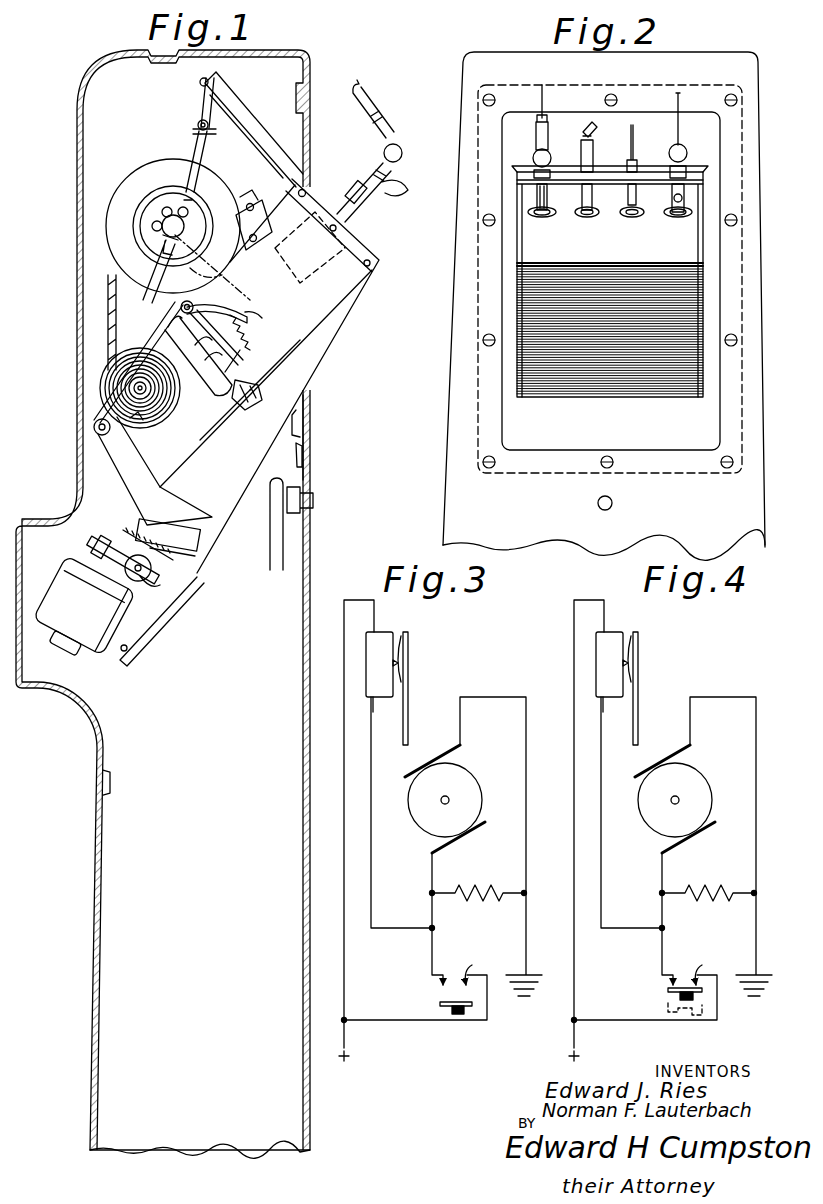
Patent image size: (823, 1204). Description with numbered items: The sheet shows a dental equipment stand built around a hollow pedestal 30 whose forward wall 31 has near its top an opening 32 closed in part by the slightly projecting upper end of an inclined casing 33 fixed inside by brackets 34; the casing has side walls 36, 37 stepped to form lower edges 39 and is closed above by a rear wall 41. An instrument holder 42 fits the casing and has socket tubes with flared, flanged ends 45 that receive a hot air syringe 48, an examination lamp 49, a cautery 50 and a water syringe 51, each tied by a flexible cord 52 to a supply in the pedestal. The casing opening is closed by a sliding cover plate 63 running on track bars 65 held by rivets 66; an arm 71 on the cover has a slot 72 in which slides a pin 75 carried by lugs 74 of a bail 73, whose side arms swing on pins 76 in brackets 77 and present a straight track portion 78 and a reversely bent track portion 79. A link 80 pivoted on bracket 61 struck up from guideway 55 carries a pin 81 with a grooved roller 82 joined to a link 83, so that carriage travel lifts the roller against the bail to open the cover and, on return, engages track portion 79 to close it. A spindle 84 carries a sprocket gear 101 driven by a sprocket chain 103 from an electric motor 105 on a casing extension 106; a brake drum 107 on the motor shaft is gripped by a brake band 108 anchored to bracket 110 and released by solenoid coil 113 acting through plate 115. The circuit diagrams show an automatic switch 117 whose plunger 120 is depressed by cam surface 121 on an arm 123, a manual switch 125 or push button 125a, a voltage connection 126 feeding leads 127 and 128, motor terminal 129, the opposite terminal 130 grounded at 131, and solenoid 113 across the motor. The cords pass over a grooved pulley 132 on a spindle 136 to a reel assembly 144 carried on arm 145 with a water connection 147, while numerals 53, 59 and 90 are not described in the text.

In FIG. 1, the hollow support or pedestal 30 is at (305, 573).
In FIG. 2, the hollow support or pedestal 30 is at (443, 505).
In FIG. 1, the forward wall 31 is at (308, 418).
In FIG. 1, the opening 32 is at (305, 395).
In FIG. 2, the opening 32 is at (510, 356).
In FIG. 1, the casing 33 is at (348, 322).
In FIG. 2, the casing 33 is at (630, 367).
In FIG. 1, the brackets 34 is at (305, 440).
In FIG. 1, the side wall 36 is at (225, 433).
In FIG. 2, the side wall 37 is at (470, 478).
In FIG. 1, the lower edges 39 is at (195, 446).
In FIG. 1, the rear wall 41 is at (294, 190).
In FIG. 1, the instrument holder 42 is at (370, 252).
In FIG. 2, the instrument holder 42 is at (610, 284).
In FIG. 1, the flange 45 is at (350, 200).
In FIG. 1, the hot air syringe 48 is at (390, 128).
In FIG. 2, the hot air syringe 48 is at (538, 132).
In FIG. 2, the examination lamp 49 is at (591, 142).
In FIG. 2, the cautery 50 is at (637, 137).
In FIG. 2, the water syringe 51 is at (683, 142).
In FIG. 1, the flexible conducting element or cord 52 is at (112, 300).
In FIG. 2, the tank rim 53 is at (700, 166).
In FIG. 1, the guideway 55 is at (213, 395).
In FIG. 1, the spring 59 is at (255, 328).
In FIG. 1, the bracket 61 is at (243, 350).
In FIG. 1, the cover plate 63 is at (273, 107).
In FIG. 1, the track bars 65 is at (262, 142).
In FIG. 1, the rivets 66 is at (362, 262).
In FIG. 1, the arm 71 is at (206, 100).
In FIG. 1, the longitudinal slot 72 is at (212, 84).
In FIG. 1, the bail 73 is at (196, 139).
In FIG. 1, the spaced lugs 74 is at (243, 133).
In FIG. 1, the pin 75 is at (200, 121).
In FIG. 1, the pins 76 is at (103, 437).
In FIG. 1, the brackets 77 is at (122, 470).
In FIG. 1, the straight track portion 78 is at (205, 275).
In FIG. 1, the opposed track portion 79 is at (142, 428).
In FIG. 1, the link 80 is at (190, 345).
In FIG. 1, the pin 81 is at (212, 307).
In FIG. 1, the grooved roller 82 is at (184, 304).
In FIG. 1, the link 83 is at (258, 313).
In FIG. 1, the spindle 84 is at (252, 390).
In FIG. 1, the plate 90 is at (164, 530).
In FIG. 1, the sprocket gear 101 is at (166, 545).
In FIG. 1, the sprocket chain 103 is at (126, 522).
In FIG. 1, the electric motor 105 is at (62, 568).
In FIG. 3, the electric motor 105 is at (478, 780).
In FIG. 4, the electric motor 105 is at (708, 780).
In FIG. 1, the extension 106 is at (149, 615).
In FIG. 1, the brake drum 107 is at (100, 532).
In FIG. 1, the brake band 108 is at (92, 540).
In FIG. 1, the bracket 110 is at (165, 573).
In FIG. 3, the solenoid coil 113 is at (474, 885).
In FIG. 4, the solenoid coil 113 is at (704, 885).
In FIG. 1, the plate 115 is at (152, 592).
In FIG. 3, the automatic switch 117 is at (387, 632).
In FIG. 4, the automatic switch 117 is at (617, 632).
In FIG. 3, the switch plunger 120 is at (398, 663).
In FIG. 4, the switch plunger 120 is at (628, 663).
In FIG. 3, the cam surface 121 is at (402, 660).
In FIG. 4, the cam surface 121 is at (632, 660).
In FIG. 3, the arm 123 is at (409, 700).
In FIG. 4, the arm 123 is at (639, 700).
In FIG. 3, the manually operable switch 125 is at (440, 1004).
In FIG. 4, the manually operable switch 125 is at (668, 992).
In FIG. 1, the push button 125a is at (313, 498).
In FIG. 2, the push button 125a is at (613, 503).
In FIG. 3, the connection 126 is at (346, 1024).
In FIG. 4, the connection 126 is at (576, 1024).
In FIG. 3, the lead 127 is at (372, 615).
In FIG. 4, the lead 127 is at (602, 615).
In FIG. 3, the lead 128 is at (415, 982).
In FIG. 4, the lead 128 is at (645, 982).
In FIG. 3, the motor terminal 129 is at (474, 830).
In FIG. 4, the motor terminal 129 is at (704, 830).
In FIG. 3, the motor terminal 130 is at (436, 757).
In FIG. 4, the motor terminal 130 is at (666, 757).
In FIG. 3, the ground connection 131 is at (526, 845).
In FIG. 4, the ground connection 131 is at (756, 845).
In FIG. 1, the grooved pulley 132 is at (167, 410).
In FIG. 1, the spindle 136 is at (162, 372).
In FIG. 1, the reel assembly 144 is at (130, 175).
In FIG. 1, the arm 145 is at (248, 250).
In FIG. 1, the water connection 147 is at (158, 250).